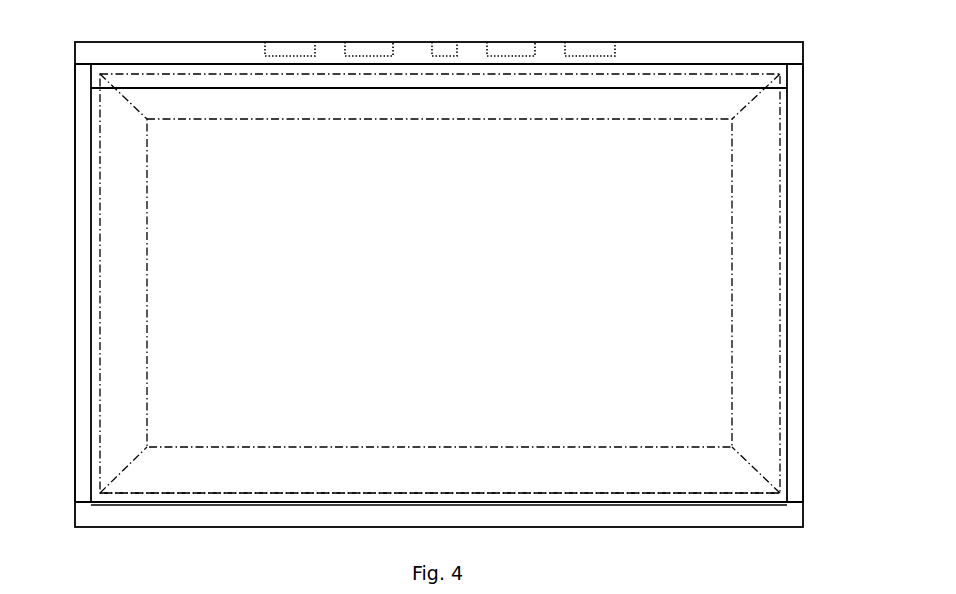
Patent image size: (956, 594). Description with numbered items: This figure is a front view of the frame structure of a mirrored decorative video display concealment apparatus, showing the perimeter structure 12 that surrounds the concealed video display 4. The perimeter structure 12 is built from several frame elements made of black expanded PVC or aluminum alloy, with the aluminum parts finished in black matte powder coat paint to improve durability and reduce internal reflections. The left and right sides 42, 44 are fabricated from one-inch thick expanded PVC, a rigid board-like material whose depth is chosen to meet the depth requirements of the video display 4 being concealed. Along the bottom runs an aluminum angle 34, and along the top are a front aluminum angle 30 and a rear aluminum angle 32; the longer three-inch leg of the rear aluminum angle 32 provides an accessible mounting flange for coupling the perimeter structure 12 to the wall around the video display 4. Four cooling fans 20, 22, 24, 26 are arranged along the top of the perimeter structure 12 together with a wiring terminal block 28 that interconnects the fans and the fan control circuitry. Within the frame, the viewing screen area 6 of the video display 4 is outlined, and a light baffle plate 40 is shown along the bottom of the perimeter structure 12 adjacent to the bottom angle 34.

The perimeter structure 12 is at (186, 577).
The front aluminum angle 30 is at (717, 42).
The aluminum angle 34 is at (672, 527).
The side 42 is at (75, 343).
The side 44 is at (803, 388).
The rear aluminum angle 32 is at (662, 92).
The video display 4 is at (778, 203).
The viewing screen area 6 is at (732, 273).
The light baffle plate 40 is at (275, 493).
The cooling fan 20 is at (277, 56).
The cooling fan 22 is at (363, 56).
The wiring terminal block 28 is at (445, 56).
The cooling fan 24 is at (508, 56).
The cooling fan 26 is at (585, 56).